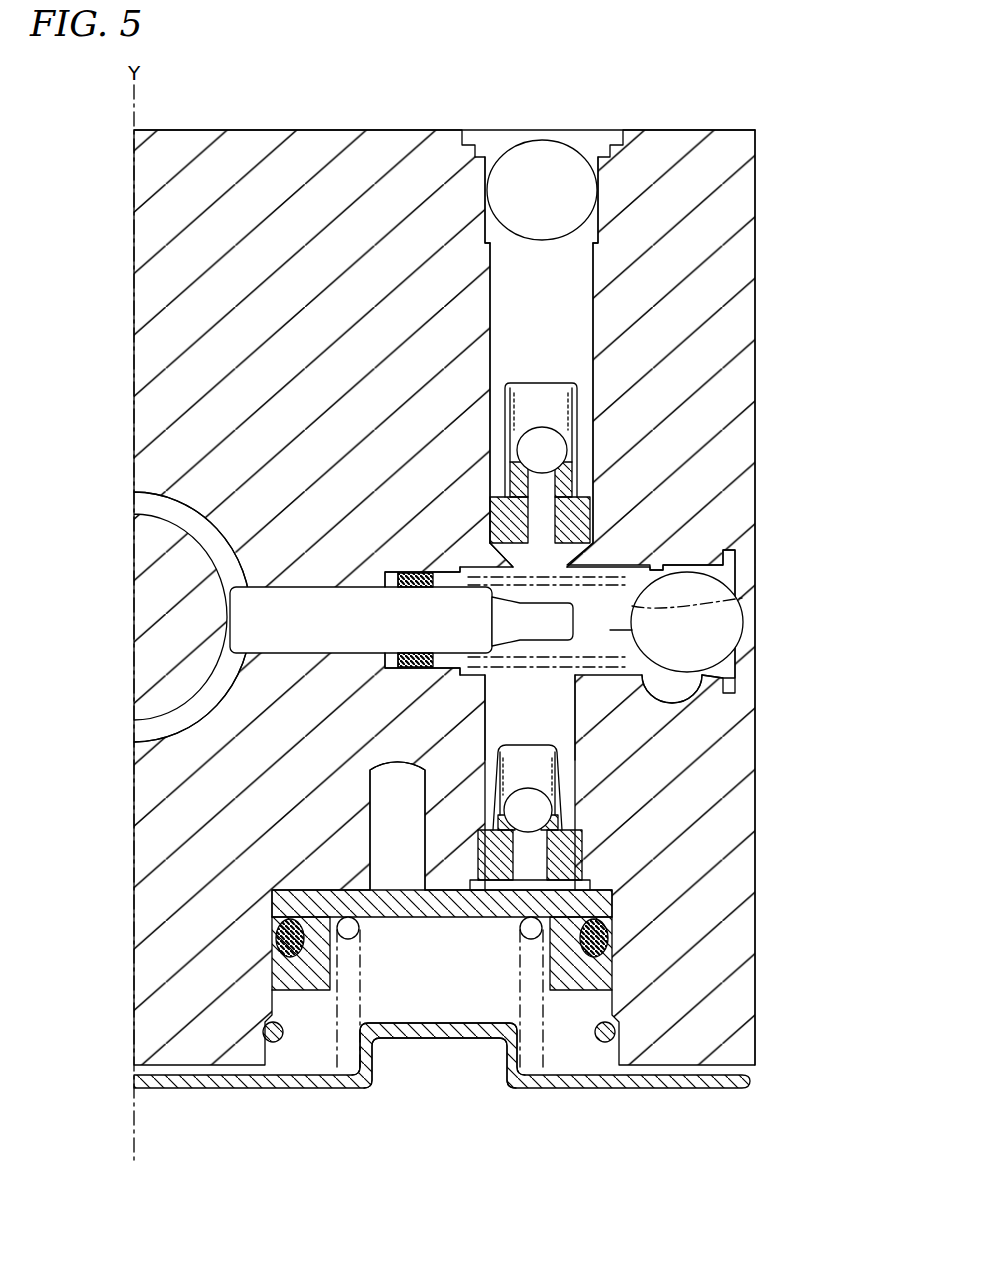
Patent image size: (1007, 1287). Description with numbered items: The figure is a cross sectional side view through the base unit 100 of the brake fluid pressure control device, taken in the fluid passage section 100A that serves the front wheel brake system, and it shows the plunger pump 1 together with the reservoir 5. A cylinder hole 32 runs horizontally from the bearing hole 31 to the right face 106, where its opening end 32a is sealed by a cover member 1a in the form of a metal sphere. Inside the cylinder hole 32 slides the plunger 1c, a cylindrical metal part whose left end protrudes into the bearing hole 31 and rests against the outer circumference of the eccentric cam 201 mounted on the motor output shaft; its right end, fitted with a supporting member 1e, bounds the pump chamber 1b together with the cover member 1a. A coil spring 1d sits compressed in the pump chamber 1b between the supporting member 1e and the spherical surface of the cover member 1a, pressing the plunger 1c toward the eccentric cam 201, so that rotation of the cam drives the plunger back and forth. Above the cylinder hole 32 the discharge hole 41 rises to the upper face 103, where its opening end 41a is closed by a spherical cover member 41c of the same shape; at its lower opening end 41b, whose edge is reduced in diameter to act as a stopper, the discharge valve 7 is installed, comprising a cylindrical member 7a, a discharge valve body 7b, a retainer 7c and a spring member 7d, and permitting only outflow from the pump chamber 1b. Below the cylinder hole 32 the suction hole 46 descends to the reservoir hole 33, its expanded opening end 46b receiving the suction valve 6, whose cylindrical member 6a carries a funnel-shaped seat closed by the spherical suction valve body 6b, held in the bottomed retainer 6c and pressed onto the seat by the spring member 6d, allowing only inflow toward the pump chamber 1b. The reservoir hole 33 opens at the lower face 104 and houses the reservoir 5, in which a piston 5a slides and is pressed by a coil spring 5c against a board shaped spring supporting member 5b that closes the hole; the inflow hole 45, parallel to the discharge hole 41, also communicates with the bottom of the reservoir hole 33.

The base unit 100 is at (238, 126).
The fluid passage section 100A is at (700, 126).
The upper face 103 is at (313, 128).
The right face 106 is at (755, 207).
The lower face 104 is at (190, 1068).
The bearing hole 31 is at (165, 503).
The eccentric cam 201 is at (158, 575).
The discharge hole 41 is at (596, 295).
The opening end 41a is at (498, 188).
The opening end 41b is at (592, 500).
The cover member 41c is at (542, 152).
The discharge valve 7 is at (651, 439).
The cylindrical member 7a is at (558, 450).
The discharge valve body 7b is at (596, 470).
The retainer 7c is at (580, 390).
The spring member 7d is at (577, 413).
The plunger pump 1 is at (640, 560).
The cover member 1a is at (700, 625).
The pump chamber 1b is at (632, 632).
The plunger 1c is at (240, 628).
The coil spring 1d is at (742, 593).
The supporting member 1e is at (575, 745).
The cylinder hole 32 is at (642, 662).
The opening end 32a is at (660, 690).
The suction hole 46 is at (580, 760).
The opening end 46b is at (498, 882).
The suction valve 6 is at (641, 827).
The cylindrical member 6a is at (590, 855).
The suction valve body 6b is at (590, 828).
The retainer 6c is at (565, 790).
The spring member 6d is at (543, 810).
The inflow hole 45 is at (390, 832).
The reservoir 5 is at (534, 1016).
The piston 5a is at (300, 985).
The spring supporting member 5b is at (330, 1086).
The coil spring 5c is at (563, 1050).
The reservoir hole 33 is at (614, 1012).